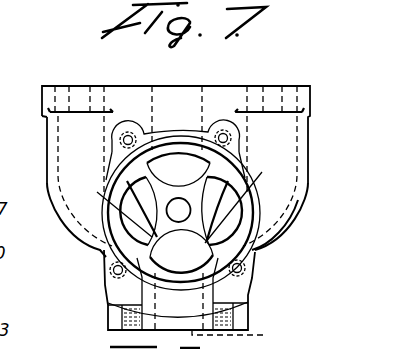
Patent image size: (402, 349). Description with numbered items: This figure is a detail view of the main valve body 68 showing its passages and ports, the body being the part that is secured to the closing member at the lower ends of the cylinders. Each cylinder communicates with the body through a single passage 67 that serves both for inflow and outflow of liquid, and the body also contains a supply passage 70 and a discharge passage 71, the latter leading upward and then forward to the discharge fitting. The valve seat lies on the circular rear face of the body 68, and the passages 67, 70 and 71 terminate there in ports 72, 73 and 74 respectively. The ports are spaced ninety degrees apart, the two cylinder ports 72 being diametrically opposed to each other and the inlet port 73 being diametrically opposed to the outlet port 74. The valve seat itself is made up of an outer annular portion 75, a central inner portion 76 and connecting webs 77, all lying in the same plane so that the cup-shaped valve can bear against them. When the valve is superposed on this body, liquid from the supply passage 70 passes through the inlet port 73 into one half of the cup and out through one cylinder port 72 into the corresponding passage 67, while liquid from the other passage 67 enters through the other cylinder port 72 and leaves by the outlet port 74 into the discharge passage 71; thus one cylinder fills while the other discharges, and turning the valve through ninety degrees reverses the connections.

The passage 67 is at (293, 211).
The valve body 68 is at (96, 235).
The supply passage 70 is at (265, 335).
The discharge passage 71 is at (183, 103).
The cylinder port 72 is at (181, 211).
The inlet port 73 is at (181, 251).
The outlet port 74 is at (178, 169).
The outer annular portion 75 is at (247, 235).
The central inner portion 76 is at (179, 210).
The connecting webs 77 is at (230, 183).